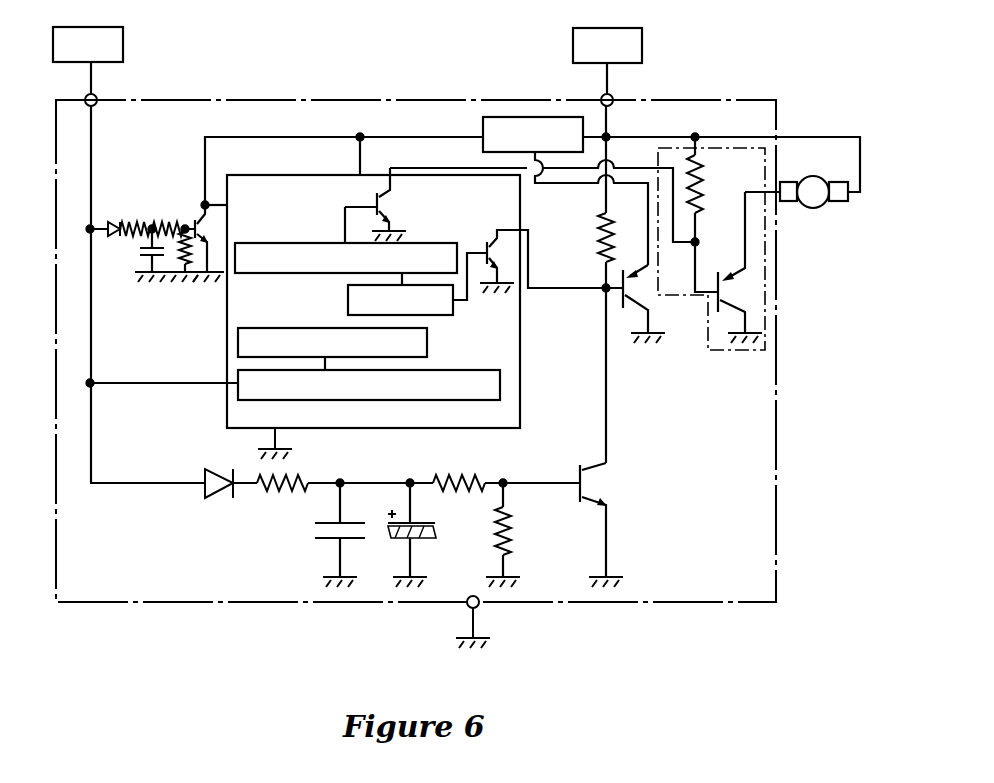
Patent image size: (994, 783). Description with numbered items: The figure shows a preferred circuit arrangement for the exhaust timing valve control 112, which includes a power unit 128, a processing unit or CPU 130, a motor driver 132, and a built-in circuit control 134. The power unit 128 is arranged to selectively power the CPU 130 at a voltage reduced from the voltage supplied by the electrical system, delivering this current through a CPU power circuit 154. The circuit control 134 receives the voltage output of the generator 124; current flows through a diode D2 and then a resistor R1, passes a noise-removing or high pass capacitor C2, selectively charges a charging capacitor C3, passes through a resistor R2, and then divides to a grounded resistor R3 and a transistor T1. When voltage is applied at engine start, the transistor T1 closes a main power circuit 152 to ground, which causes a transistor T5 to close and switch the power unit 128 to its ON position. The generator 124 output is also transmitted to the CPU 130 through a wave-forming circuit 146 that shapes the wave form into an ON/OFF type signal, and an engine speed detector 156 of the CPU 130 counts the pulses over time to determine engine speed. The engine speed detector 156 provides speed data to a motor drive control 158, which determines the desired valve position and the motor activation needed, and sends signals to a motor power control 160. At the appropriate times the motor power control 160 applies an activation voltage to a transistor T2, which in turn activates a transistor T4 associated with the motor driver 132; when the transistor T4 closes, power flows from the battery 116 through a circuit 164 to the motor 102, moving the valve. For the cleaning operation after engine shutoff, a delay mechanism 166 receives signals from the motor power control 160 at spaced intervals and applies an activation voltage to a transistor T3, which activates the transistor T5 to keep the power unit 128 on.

The motor 102 is at (822, 207).
The exhaust timing valve control 112 is at (713, 100).
The battery 116 is at (642, 43).
The generator 124 is at (123, 43).
The power unit 128 is at (483, 122).
The processing unit (CPU) 130 is at (250, 175).
The motor driver 132 is at (739, 291).
The built-in circuit control 134 is at (708, 551).
The wave-forming circuit 146 is at (163, 302).
The main power circuit 152 is at (604, 432).
The CPU power circuit 154 is at (400, 137).
The engine speed detector 156 is at (412, 400).
The motor drive control 158 is at (427, 342).
The motor power control 160 is at (248, 273).
The circuit 164 is at (745, 215).
The delay mechanism 166 is at (455, 307).
The transistor T1 is at (598, 483).
The transistor T2 is at (377, 195).
The transistor T3 is at (490, 246).
The transistor T4 is at (730, 297).
The transistor T5 is at (645, 300).
The resistor R1 is at (280, 495).
The resistor R2 is at (478, 482).
The resistor R3 is at (507, 553).
The capacitor C2 is at (325, 547).
The charging capacitor C3 is at (418, 542).
The diode D2 is at (218, 498).